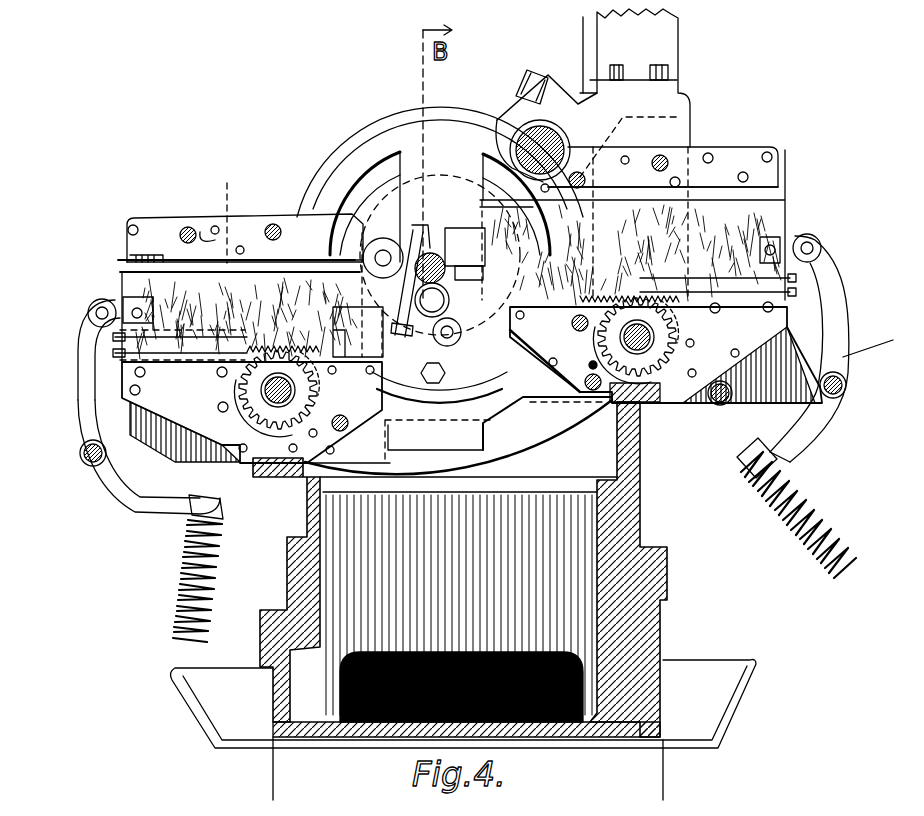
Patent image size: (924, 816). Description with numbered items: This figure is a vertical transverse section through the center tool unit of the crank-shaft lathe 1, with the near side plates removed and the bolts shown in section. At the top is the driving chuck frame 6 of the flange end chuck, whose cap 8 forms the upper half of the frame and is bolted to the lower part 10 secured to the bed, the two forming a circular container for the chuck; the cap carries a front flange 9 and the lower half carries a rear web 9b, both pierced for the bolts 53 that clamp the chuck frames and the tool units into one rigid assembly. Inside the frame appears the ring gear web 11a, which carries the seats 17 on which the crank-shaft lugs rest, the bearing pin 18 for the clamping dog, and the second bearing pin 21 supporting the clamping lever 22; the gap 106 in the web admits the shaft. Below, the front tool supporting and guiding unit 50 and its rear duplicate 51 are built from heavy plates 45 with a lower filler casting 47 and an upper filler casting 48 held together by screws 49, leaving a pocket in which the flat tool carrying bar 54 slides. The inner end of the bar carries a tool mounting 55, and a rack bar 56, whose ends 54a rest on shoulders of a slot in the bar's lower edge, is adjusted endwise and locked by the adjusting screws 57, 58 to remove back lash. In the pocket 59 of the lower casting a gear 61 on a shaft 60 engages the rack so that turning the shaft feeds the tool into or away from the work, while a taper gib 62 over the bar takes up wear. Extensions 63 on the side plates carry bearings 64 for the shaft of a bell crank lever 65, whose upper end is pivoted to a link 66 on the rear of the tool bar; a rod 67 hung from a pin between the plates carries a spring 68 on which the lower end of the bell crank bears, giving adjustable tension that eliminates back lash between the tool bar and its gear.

The lathe 1 is at (670, 577).
The driving chuck frame 6 is at (462, 125).
The cap 8 is at (382, 127).
The flange 9 is at (250, 265).
The web 9b is at (663, 133).
The lower part of chuck frame 10 is at (528, 390).
The ring gear web 11a is at (375, 183).
The seat 17 is at (446, 310).
The bearing pin 18 is at (453, 333).
The second bearing pin 21 is at (377, 255).
The clamping lever 22 is at (420, 200).
The plate 45 is at (133, 227).
The lower filler casting 47 is at (130, 379).
The upper filler casting 48 is at (215, 237).
The screw 49 is at (130, 233).
The tool supporting and guiding unit 50 is at (88, 312).
The rear tool unit 51 is at (847, 302).
The bolt 53 is at (273, 226).
The tool carrying bar 54 is at (123, 285).
The rack bar end 54a is at (692, 279).
The mounting 55 is at (393, 288).
The rack bar 56 is at (290, 345).
The adjusting screw 57 is at (787, 274).
The adjusting screw 58 is at (218, 340).
The pocket 59 is at (323, 383).
The shaft 60 is at (292, 388).
The gear 61 is at (263, 413).
The taper gib 62 is at (245, 271).
The extension 63 is at (140, 455).
The bearing 64 is at (82, 460).
The bell crank lever 65 is at (88, 428).
The link 66 is at (90, 324).
The rod 67 is at (200, 495).
The spring 68 is at (208, 587).
The gap 106 is at (453, 167).